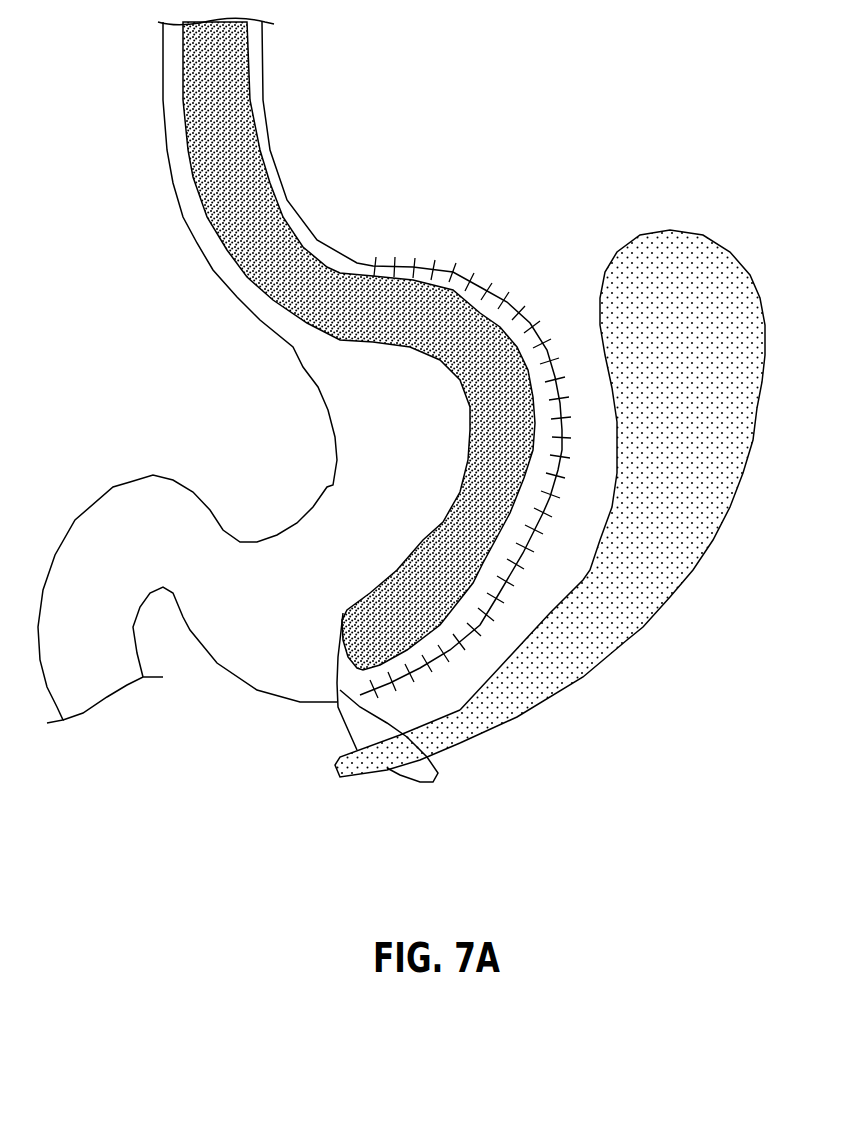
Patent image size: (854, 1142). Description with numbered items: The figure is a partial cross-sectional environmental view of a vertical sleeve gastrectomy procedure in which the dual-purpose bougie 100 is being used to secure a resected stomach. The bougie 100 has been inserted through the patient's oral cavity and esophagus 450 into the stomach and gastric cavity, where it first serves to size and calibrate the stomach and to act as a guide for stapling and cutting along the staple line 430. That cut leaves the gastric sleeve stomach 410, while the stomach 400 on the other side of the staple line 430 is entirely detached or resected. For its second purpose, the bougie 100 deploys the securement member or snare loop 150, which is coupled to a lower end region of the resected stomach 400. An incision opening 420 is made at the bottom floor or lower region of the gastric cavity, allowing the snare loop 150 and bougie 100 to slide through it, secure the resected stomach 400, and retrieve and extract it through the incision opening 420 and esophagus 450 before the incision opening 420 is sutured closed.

The bougie 100 is at (220, 88).
The snare loop 150 is at (443, 763).
The resected stomach 400 is at (630, 603).
The gastric sleeve stomach 410 is at (355, 450).
The incision opening 420 is at (352, 714).
The staple line 430 is at (472, 264).
The esophagus 450 is at (163, 77).